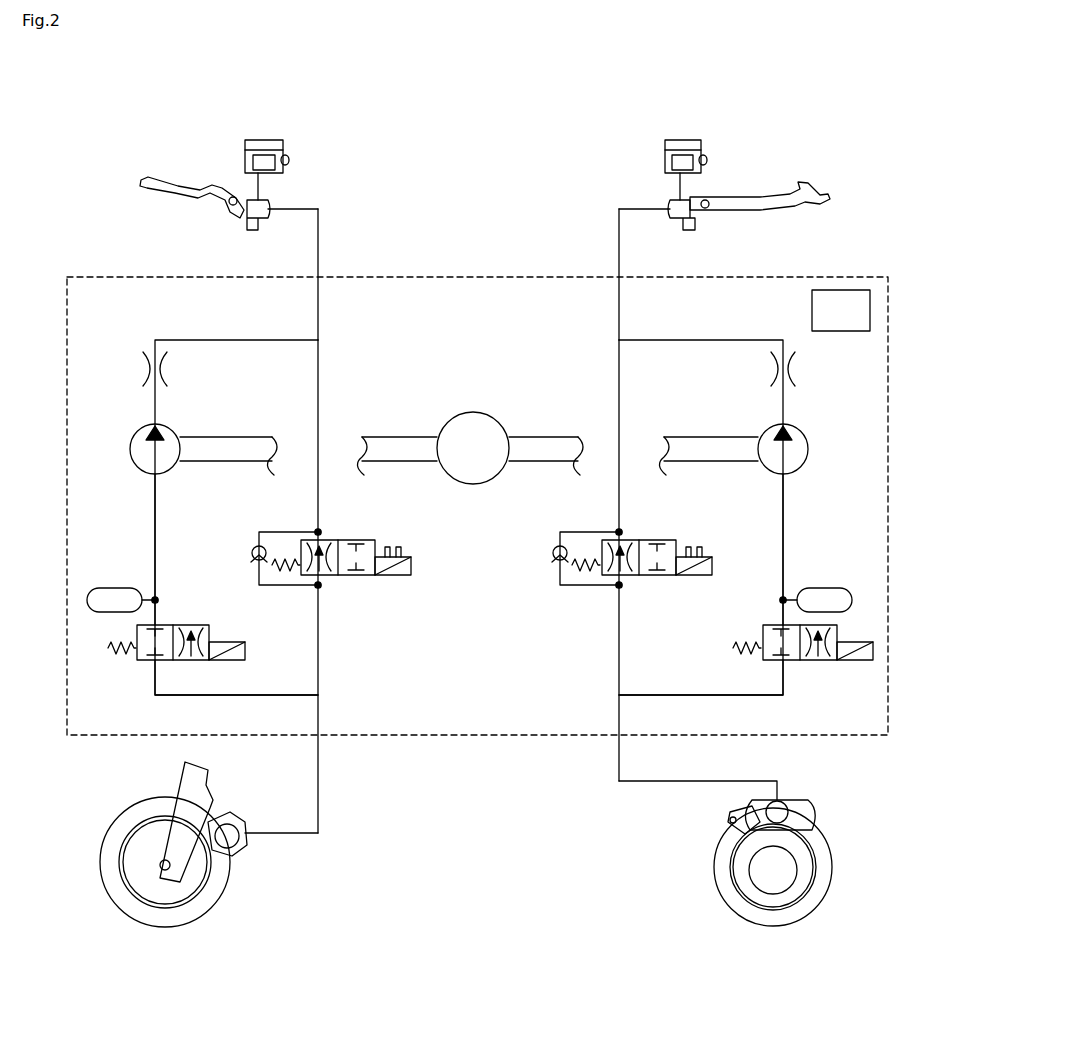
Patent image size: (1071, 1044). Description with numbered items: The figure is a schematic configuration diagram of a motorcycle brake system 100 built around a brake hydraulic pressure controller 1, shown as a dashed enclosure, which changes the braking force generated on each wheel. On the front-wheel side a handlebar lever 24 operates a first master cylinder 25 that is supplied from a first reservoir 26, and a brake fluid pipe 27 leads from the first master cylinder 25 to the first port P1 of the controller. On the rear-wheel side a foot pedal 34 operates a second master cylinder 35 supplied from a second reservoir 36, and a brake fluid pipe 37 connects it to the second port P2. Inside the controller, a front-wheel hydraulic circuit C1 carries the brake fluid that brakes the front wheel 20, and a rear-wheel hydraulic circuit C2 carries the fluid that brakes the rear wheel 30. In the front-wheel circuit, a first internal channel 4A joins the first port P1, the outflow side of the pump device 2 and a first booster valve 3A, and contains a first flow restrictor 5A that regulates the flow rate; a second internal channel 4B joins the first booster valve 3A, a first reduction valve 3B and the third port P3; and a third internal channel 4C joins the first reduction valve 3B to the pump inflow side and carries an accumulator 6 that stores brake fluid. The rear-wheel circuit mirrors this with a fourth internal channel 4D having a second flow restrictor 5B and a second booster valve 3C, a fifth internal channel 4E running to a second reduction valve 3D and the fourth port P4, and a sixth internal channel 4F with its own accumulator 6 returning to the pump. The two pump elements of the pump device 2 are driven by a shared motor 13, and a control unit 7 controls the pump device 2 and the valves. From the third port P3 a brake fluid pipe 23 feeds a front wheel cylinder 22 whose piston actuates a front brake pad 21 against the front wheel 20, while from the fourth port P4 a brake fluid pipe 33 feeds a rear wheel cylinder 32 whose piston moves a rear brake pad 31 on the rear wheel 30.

The brake system 100 is at (582, 128).
The brake hydraulic pressure controller 1 is at (102, 273).
The pump device 2 is at (174, 468).
The first booster valve 3A is at (365, 578).
The first reduction valve 3B is at (195, 624).
The second booster valve 3C is at (668, 578).
The second reduction valve 3D is at (820, 662).
The first internal channel 4A is at (322, 392).
The second internal channel 4B is at (272, 694).
The third internal channel 4C is at (153, 516).
The fourth internal channel 4D is at (617, 392).
The fifth internal channel 4E is at (700, 694).
The sixth internal channel 4F is at (786, 532).
The first flow restrictor 5A is at (168, 372).
The second flow restrictor 5B is at (770, 372).
The accumulator 6 is at (112, 588).
The control unit 7 is at (840, 333).
The motor 13 is at (452, 420).
The front-wheel hydraulic circuit C1 is at (324, 340).
The rear-wheel hydraulic circuit C2 is at (614, 340).
The first port P1 is at (322, 275).
The second port P2 is at (617, 275).
The third port P3 is at (322, 742).
The fourth port P4 is at (617, 742).
The front wheel 20 is at (116, 800).
The front brake pad 21 is at (225, 802).
The front wheel cylinder 22 is at (245, 826).
The brake fluid pipe 23 is at (280, 836).
The handlebar lever 24 is at (165, 188).
The first master cylinder 25 is at (263, 220).
The first reservoir 26 is at (268, 140).
The brake fluid pipe 27 is at (300, 208).
The rear wheel 30 is at (842, 880).
The rear brake pad 31 is at (735, 822).
The rear wheel cylinder 32 is at (786, 800).
The brake fluid pipe 33 is at (705, 783).
The foot pedal 34 is at (800, 186).
The second master cylinder 35 is at (683, 222).
The second reservoir 36 is at (682, 140).
The brake fluid pipe 37 is at (635, 208).